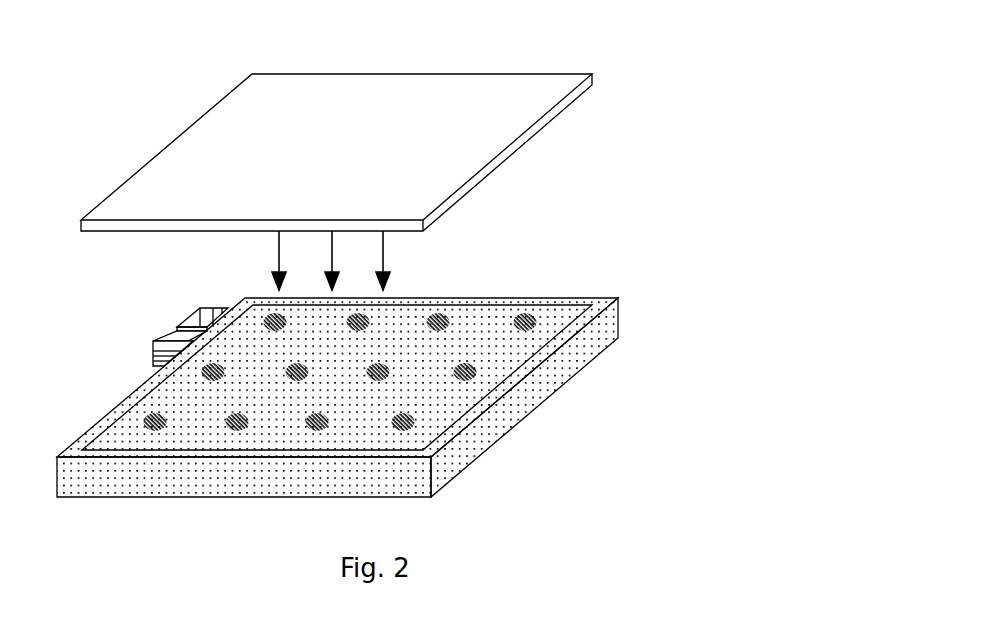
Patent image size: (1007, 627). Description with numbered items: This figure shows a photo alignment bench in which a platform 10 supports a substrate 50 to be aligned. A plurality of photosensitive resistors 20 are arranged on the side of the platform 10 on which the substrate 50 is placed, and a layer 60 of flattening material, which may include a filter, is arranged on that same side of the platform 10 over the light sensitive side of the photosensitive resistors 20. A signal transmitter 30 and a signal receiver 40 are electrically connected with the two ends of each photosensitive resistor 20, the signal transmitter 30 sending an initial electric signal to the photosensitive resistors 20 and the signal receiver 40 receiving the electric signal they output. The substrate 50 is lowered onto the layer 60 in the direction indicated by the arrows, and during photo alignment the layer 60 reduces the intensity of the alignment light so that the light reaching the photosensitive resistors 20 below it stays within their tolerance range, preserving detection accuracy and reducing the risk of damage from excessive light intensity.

The platform 10 is at (557, 373).
The photosensitive resistor 20 is at (403, 360).
The signal transmitter 30 is at (207, 315).
The signal receiver 40 is at (163, 360).
The substrate to be aligned 50 is at (297, 88).
The layer of flattening material 60 is at (545, 320).